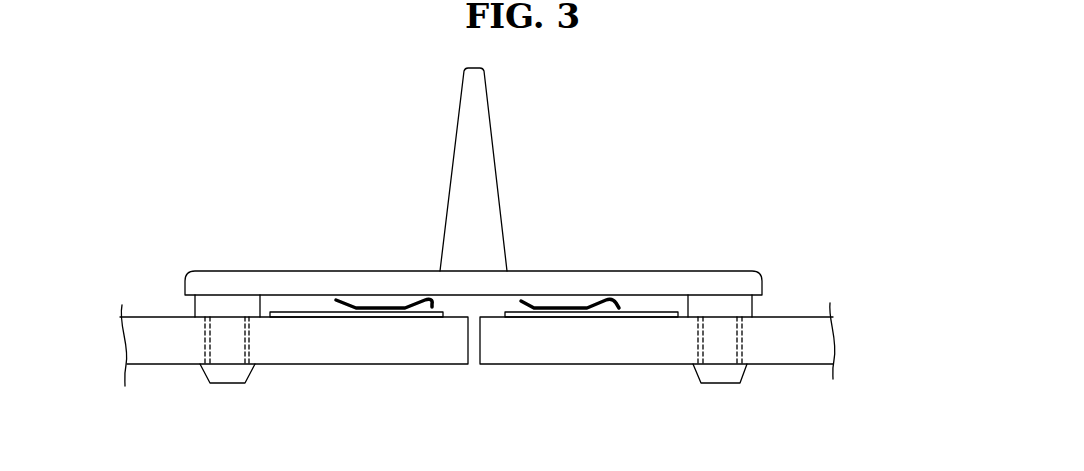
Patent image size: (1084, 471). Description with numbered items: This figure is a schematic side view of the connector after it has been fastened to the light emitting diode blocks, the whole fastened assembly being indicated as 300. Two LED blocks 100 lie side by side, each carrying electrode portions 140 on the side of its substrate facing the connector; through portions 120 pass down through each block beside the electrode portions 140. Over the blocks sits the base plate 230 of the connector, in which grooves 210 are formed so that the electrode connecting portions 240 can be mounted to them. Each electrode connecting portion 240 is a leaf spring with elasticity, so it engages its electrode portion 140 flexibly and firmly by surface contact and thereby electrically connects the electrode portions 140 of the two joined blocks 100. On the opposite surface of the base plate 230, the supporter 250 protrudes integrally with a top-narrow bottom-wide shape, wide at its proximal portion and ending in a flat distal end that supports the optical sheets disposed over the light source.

The LED block 100 is at (836, 343).
The through-hole electrode 120 is at (746, 348).
The electrode portion 140 is at (313, 318).
The groove 210 is at (742, 312).
The base plate 230 is at (745, 279).
The electrode connecting portion 240 is at (390, 307).
The supporter 250 is at (482, 140).
The connector assembly 300 is at (237, 186).